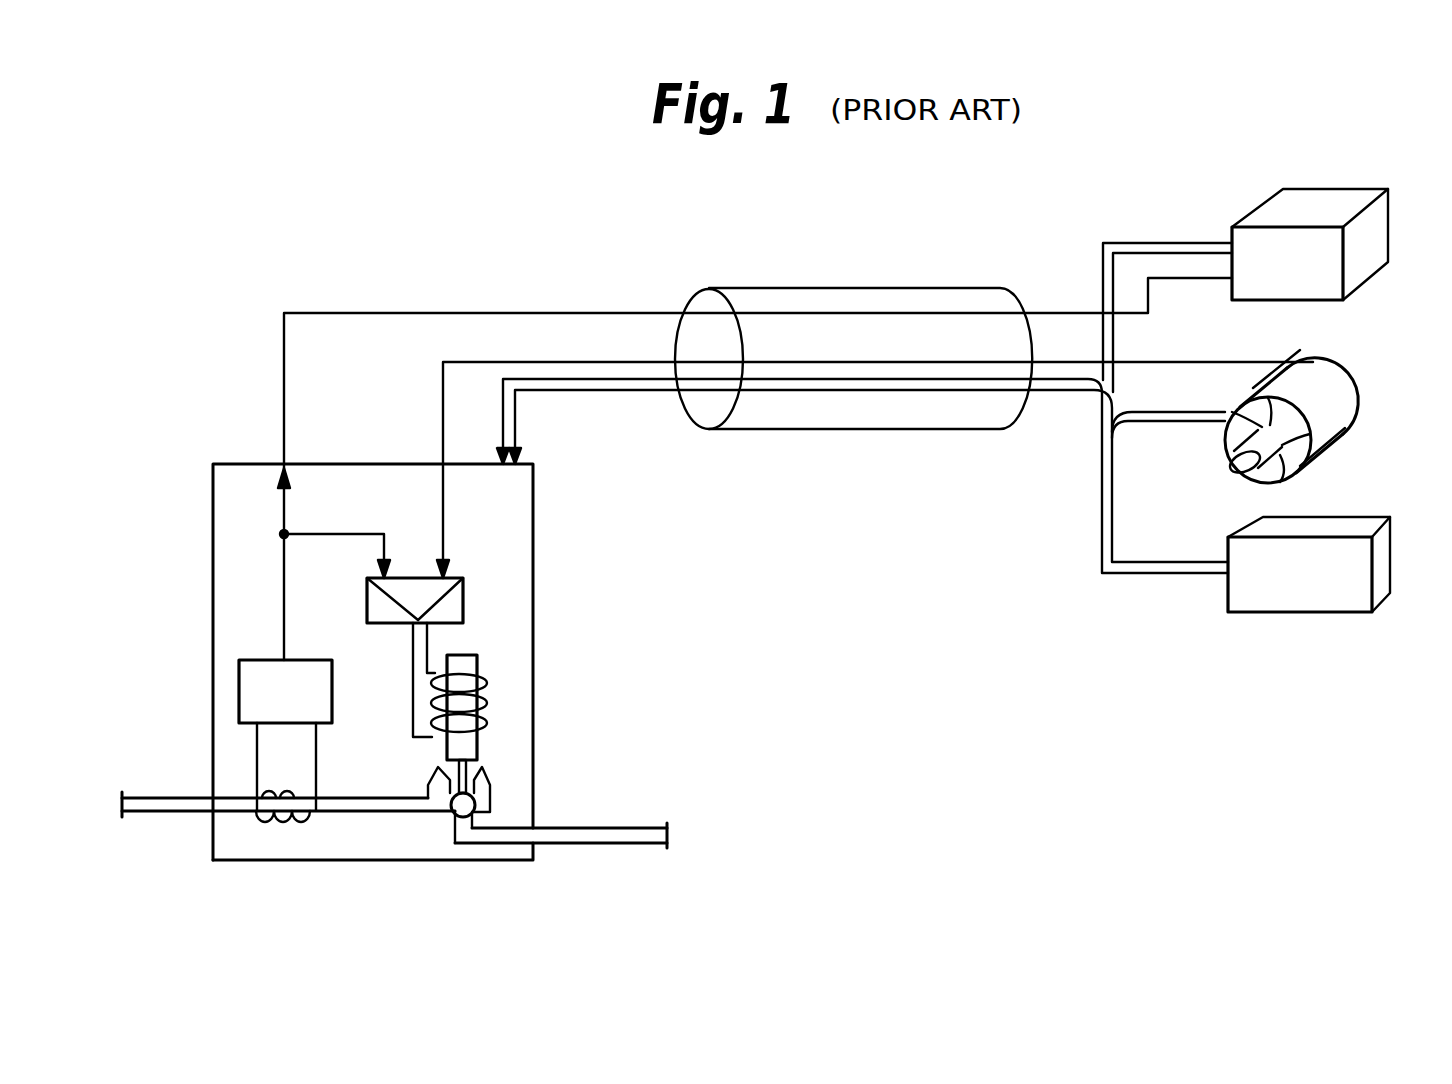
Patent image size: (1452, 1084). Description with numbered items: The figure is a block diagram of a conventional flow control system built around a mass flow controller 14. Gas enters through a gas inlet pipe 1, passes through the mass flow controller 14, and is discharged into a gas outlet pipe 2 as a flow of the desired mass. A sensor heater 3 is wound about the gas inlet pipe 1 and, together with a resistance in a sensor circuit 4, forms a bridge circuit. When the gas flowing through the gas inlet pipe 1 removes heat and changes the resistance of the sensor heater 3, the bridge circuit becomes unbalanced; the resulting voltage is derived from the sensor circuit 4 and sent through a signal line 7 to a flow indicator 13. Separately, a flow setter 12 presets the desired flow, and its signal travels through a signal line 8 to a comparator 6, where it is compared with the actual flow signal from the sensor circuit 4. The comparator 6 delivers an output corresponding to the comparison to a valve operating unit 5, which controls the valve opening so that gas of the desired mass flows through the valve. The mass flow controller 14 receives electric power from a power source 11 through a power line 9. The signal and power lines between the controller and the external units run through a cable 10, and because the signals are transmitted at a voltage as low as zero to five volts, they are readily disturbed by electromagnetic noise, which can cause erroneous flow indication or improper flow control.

The gas inlet pipe 1 is at (146, 796).
The gas outlet pipe 2 is at (608, 843).
The sensor heater 3 is at (292, 822).
The sensor circuit 4 is at (332, 706).
The valve operating unit 5 is at (487, 672).
The comparator 6 is at (463, 595).
The signal line 7 is at (462, 312).
The signal line 8 is at (570, 361).
The power line 9 is at (600, 394).
The cable 10 is at (897, 288).
The power source 11 is at (1372, 606).
The flow setter 12 is at (1355, 402).
The flow indicator 13 is at (1388, 232).
The mass flow controller 14 is at (533, 775).